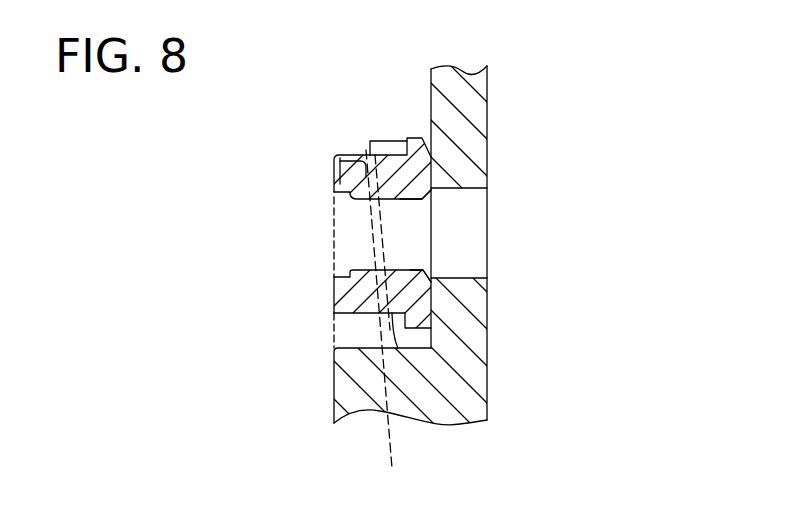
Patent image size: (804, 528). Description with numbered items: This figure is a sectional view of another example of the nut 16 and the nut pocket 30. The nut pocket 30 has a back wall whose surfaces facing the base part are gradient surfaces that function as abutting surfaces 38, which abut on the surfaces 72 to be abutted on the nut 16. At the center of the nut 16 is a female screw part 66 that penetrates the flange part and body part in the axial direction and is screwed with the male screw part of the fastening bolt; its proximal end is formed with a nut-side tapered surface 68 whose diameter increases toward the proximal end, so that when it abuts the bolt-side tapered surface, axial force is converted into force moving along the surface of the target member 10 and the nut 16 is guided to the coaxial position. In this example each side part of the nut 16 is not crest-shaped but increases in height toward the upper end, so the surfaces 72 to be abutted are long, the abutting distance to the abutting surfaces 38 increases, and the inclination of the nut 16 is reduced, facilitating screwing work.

The target member 10 is at (480, 394).
The nut 16 is at (370, 195).
The nut pocket 30 is at (370, 217).
The abutting surface 38 is at (398, 150).
The female screw part 66 is at (418, 196).
The nut-side tapered surface 68 is at (431, 278).
The surface to be abutted 72 is at (380, 324).